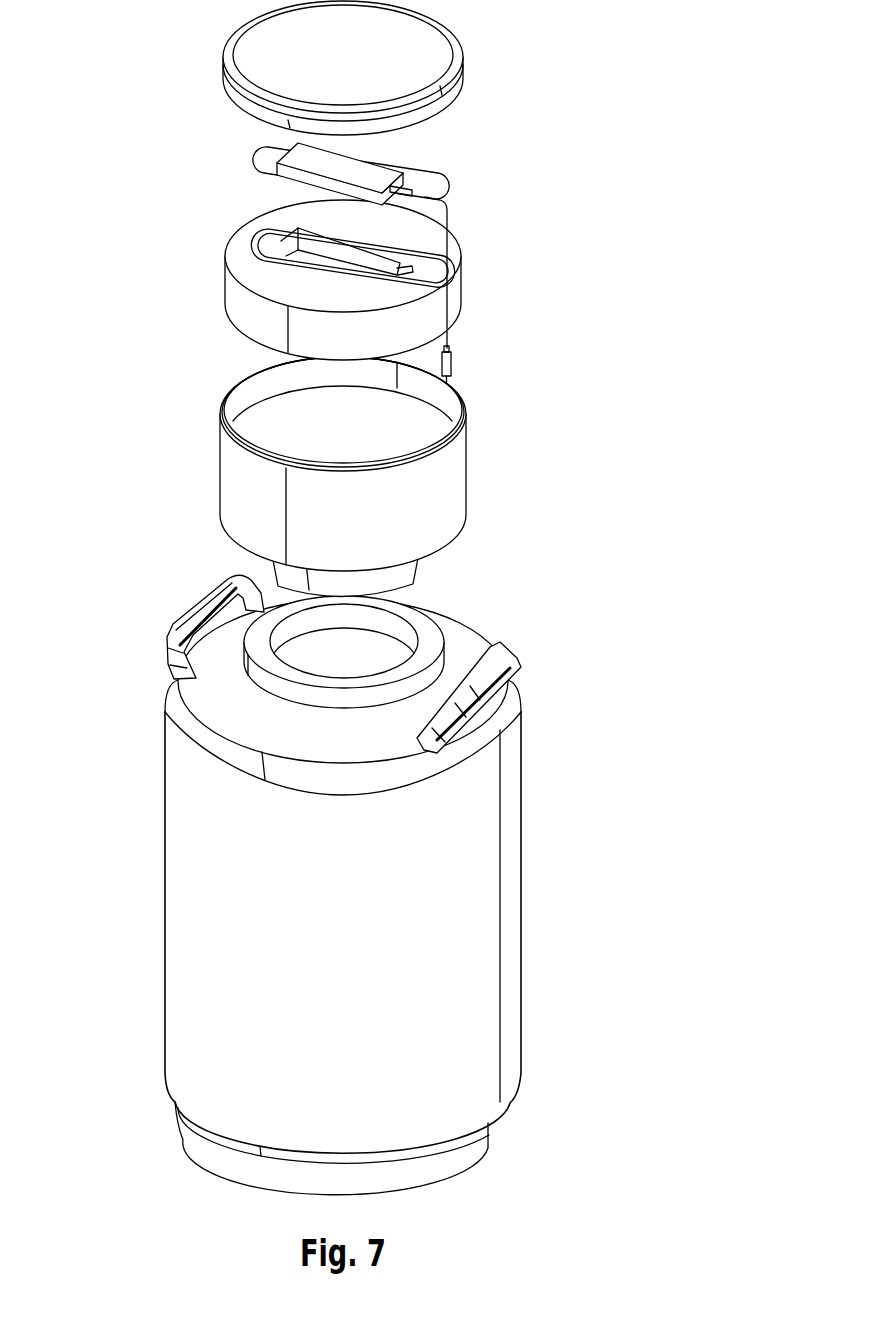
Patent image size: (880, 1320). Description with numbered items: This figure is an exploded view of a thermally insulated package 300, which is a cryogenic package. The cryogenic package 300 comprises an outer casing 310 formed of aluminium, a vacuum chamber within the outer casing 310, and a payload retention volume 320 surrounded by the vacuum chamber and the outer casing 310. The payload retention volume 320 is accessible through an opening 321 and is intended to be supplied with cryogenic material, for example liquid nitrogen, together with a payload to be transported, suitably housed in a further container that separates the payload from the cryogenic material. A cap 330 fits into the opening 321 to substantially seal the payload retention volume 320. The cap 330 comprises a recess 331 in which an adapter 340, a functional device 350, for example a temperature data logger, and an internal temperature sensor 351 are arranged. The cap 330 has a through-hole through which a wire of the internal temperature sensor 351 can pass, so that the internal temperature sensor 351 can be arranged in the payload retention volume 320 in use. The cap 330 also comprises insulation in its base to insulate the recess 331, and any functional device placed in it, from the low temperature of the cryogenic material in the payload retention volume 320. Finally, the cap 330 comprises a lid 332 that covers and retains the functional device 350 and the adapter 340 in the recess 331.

The thermally insulated package 300 is at (134, 548).
The outer casing 310 is at (511, 872).
The payload retention volume 320 is at (373, 646).
The opening 321 is at (417, 637).
The cap 330 is at (443, 493).
The recess 331 is at (262, 378).
The lid 332 is at (463, 64).
The adapter 340 is at (457, 295).
The functional device 350 is at (405, 167).
The internal temperature sensor 351 is at (443, 367).